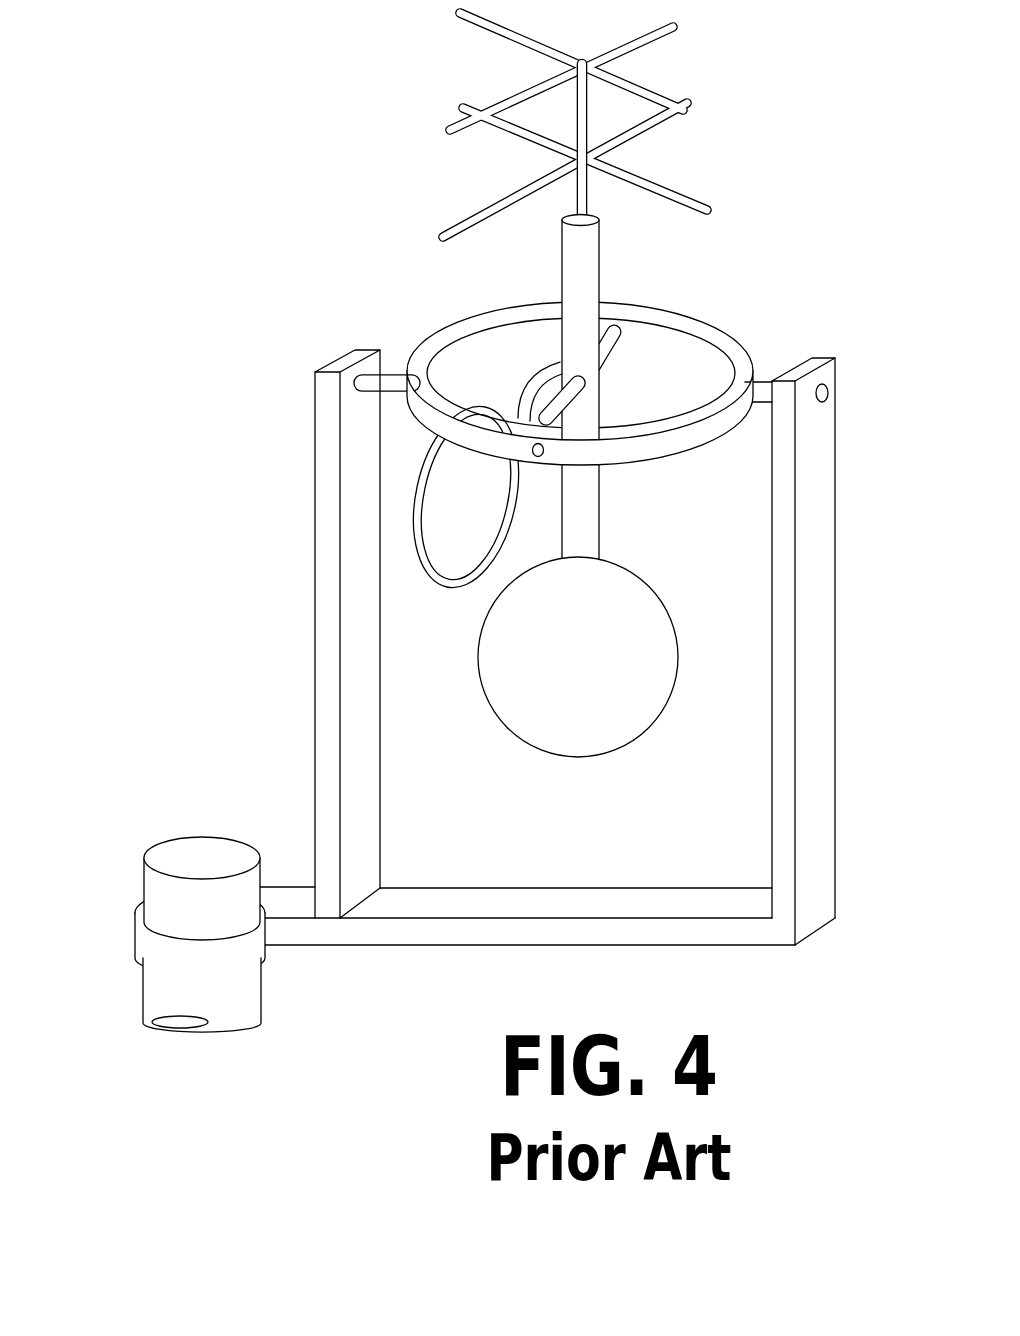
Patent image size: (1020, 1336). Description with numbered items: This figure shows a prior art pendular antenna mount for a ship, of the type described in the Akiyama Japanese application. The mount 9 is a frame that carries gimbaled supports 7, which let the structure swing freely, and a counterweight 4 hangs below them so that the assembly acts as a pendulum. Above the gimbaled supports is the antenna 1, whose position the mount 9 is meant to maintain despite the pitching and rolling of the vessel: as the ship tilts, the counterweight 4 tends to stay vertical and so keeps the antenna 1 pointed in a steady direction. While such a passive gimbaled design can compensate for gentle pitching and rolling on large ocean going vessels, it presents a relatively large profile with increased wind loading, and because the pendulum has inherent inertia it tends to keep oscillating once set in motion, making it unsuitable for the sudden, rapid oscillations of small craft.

The antenna 1 is at (645, 86).
The counterweight 4 is at (502, 690).
The gimbaled support 7 is at (393, 372).
The mount 9 is at (315, 768).